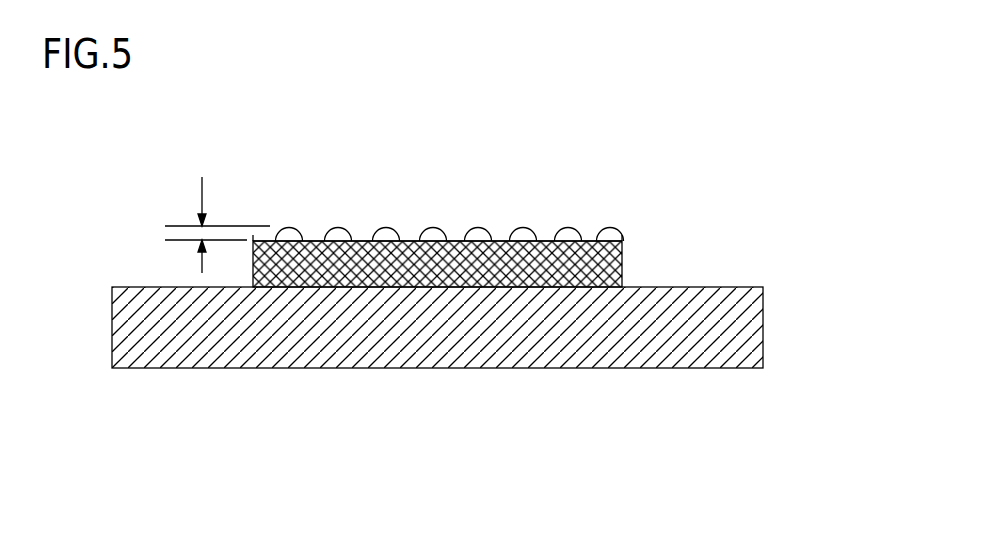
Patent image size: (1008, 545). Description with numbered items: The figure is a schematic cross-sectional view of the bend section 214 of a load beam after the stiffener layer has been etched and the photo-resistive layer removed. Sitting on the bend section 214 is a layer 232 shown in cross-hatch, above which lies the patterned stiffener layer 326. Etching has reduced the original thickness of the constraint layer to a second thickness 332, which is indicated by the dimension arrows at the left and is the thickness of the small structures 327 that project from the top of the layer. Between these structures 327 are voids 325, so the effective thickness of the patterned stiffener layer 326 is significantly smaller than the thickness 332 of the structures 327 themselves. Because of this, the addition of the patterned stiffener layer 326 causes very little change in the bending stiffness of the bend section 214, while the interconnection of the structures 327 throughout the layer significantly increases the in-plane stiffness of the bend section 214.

The bend section 214 is at (495, 352).
The adhesive layer 232 is at (607, 268).
The voids 325 is at (315, 241).
The structures 327 is at (337, 230).
The patterned stiffener layer 326 is at (608, 230).
The second thickness 332 is at (217, 208).